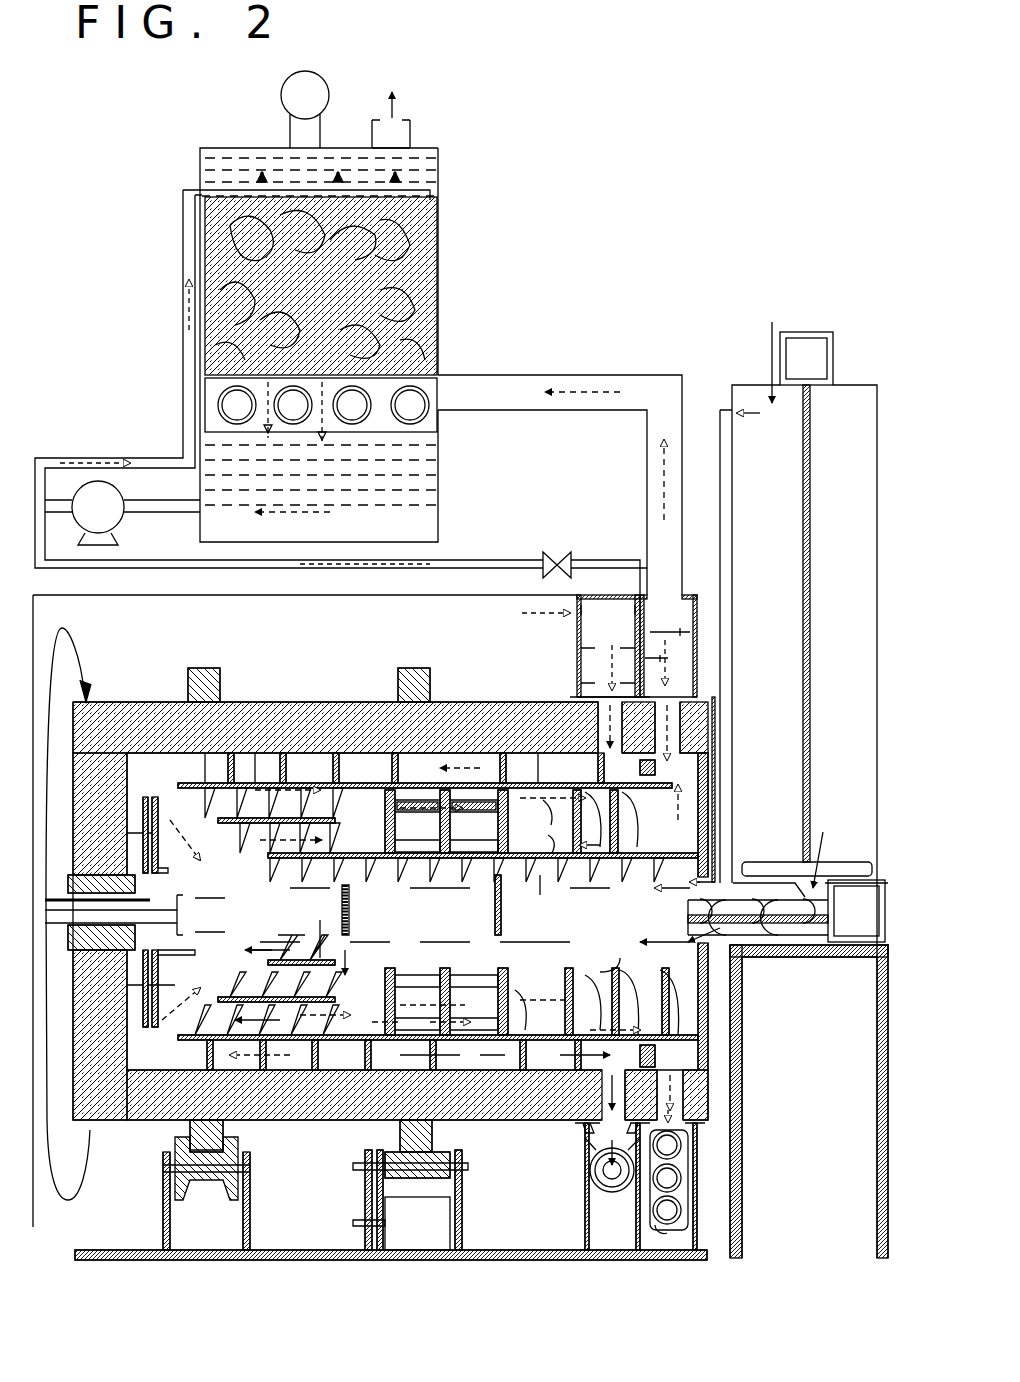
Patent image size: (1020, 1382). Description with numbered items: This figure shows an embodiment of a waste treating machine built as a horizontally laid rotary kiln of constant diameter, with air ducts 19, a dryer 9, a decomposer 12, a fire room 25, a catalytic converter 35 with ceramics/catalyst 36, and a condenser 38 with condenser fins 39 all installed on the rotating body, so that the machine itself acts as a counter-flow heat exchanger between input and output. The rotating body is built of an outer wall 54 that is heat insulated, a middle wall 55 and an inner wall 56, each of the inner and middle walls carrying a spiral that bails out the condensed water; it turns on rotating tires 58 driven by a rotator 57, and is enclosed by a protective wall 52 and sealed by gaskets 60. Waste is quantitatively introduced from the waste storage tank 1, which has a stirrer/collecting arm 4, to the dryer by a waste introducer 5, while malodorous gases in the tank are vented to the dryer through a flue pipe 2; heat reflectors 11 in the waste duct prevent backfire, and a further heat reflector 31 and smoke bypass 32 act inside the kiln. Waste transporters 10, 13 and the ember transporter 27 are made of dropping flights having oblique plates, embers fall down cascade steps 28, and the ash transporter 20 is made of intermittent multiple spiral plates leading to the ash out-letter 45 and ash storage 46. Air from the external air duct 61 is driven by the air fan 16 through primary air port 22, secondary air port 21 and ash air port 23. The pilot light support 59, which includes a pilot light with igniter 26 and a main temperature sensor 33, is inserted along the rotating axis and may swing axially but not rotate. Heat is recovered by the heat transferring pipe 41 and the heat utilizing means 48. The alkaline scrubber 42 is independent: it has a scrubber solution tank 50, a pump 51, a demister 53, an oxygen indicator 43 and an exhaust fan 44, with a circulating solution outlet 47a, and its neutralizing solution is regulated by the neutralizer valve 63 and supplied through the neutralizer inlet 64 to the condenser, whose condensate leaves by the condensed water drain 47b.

The waste storage tank 1 is at (798, 624).
The flue pipe 2 is at (728, 766).
The stirrer/collecting arm 4 is at (773, 869).
The waste introducer 5 is at (688, 917).
The dryer 9 is at (645, 967).
The waste transporter 10 is at (585, 958).
The heat reflector 11 is at (532, 903).
The decomposer 12 is at (427, 915).
The waste transporter 13 is at (500, 917).
The air fan 16 is at (587, 631).
The air duct 19 is at (425, 785).
The ash transporter 20 is at (439, 770).
The secondary air port 21 is at (370, 777).
The primary air port 22 is at (163, 814).
The ash air port 23 is at (421, 1038).
The fire room 25 is at (267, 915).
The pilot light with igniter 26 is at (212, 915).
The ember transporter 27 is at (320, 929).
The cascade steps/embers dropper 28 is at (285, 968).
The heat reflector 31 is at (170, 988).
The smoke bypass 32 is at (288, 985).
The main temperature sensor 33 is at (123, 900).
The catalytic converter 35 is at (423, 821).
The ceramics/catalyst 36 is at (469, 821).
The condenser 38 is at (541, 821).
The condenser fin 39 is at (612, 828).
The heat transferring pipe 41 is at (217, 427).
The alkaline scrubber 42 is at (321, 273).
The O2 43 is at (322, 100).
The exhaust fan 44 is at (417, 104).
The ash out-letter 45 is at (602, 1165).
The ash storage 46 is at (612, 1186).
The circulating solution outlet 47a is at (177, 505).
The condensed water drain 47b is at (668, 1123).
The heat utilizing means 48 is at (683, 1215).
The scrubber solution tank 50 is at (319, 345).
The pump 51 is at (108, 487).
The protective wall 52 is at (155, 595).
The demister 53 is at (218, 162).
The outer wall 54 is at (262, 737).
The middle wall 55 is at (318, 820).
The inner wall 56 is at (374, 915).
The rotator 57 is at (405, 1185).
The rotating tire 58 is at (413, 682).
The pilot light support 59 is at (107, 885).
The gasket 60 is at (577, 695).
The external air duct 61 is at (60, 914).
The neutralizer valve 63 is at (550, 547).
The neutralizer inlet 64 is at (567, 536).